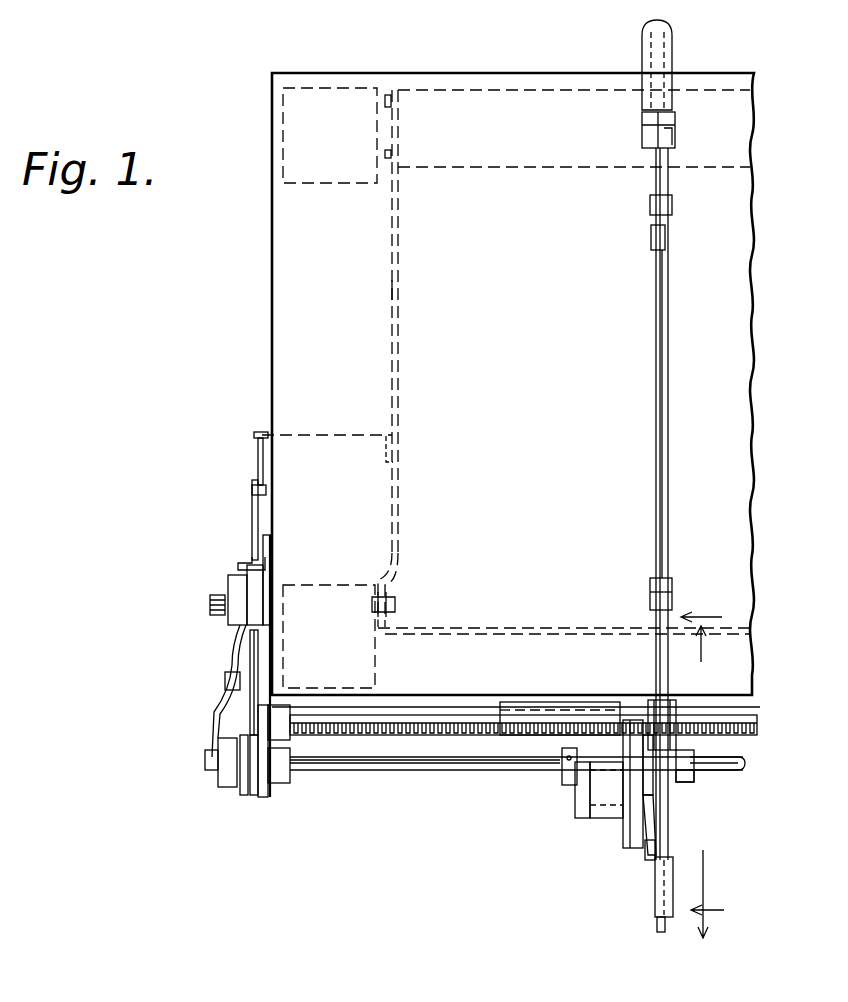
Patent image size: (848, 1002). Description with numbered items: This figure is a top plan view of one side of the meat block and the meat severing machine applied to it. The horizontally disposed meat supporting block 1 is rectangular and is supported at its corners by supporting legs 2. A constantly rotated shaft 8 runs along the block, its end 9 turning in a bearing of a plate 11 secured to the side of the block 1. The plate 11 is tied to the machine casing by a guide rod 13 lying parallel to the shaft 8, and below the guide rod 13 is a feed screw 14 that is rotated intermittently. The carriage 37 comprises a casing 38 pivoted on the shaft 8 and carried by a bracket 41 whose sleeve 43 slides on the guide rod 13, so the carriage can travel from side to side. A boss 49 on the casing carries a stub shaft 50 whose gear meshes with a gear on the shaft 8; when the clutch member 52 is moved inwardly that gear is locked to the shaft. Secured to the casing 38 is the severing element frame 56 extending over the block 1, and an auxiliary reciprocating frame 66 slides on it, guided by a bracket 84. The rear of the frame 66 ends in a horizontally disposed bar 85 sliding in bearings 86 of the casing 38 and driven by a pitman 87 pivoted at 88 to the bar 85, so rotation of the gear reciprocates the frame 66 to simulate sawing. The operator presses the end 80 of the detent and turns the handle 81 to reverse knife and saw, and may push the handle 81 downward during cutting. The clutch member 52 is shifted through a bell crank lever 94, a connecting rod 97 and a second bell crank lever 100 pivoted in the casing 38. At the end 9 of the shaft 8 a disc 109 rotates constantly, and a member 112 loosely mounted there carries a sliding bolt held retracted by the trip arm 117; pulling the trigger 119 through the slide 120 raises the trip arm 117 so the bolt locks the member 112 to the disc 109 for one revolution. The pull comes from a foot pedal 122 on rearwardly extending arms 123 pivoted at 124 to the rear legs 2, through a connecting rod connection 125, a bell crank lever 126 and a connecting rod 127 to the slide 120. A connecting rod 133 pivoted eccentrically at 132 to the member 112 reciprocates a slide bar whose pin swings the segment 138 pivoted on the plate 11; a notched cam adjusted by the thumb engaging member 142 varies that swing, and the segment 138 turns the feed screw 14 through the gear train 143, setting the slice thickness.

The meat supporting block 1 is at (524, 332).
The supporting legs 2 is at (342, 186).
The constantly rotated shaft 8 is at (425, 772).
The end of shaft 9 is at (305, 772).
The plate 11 is at (272, 588).
The guide rod 13 is at (440, 715).
The feed screw 14 is at (702, 777).
The carriage 37 is at (622, 812).
The casing 38 is at (636, 848).
The bracket 41 is at (562, 760).
The sleeve 43 is at (514, 704).
The boss 49 is at (578, 806).
The stub shaft 50 is at (600, 822).
The clutch member 52 is at (690, 784).
The severing element frame 56 is at (669, 305).
The auxiliary reciprocating frame 66 is at (656, 344).
The end of pivoted detent 80 is at (676, 119).
The handle 81 is at (674, 50).
The bracket 84 is at (644, 797).
The horizontally disposed bar 85 is at (661, 933).
The bearings 86 is at (655, 905).
The pitman 87 is at (650, 828).
The pivotal connection 88 is at (651, 862).
The bell crank lever 94 is at (672, 712).
The connecting rod 97 is at (685, 762).
The bell crank lever 100 is at (692, 775).
The disc 109 is at (256, 798).
The member 112 is at (226, 788).
The trip arm 117 is at (245, 797).
The trigger 119 is at (260, 712).
The slide 120 is at (248, 558).
The foot pedal 122 is at (465, 170).
The rearwardly extending arms 123 is at (398, 288).
The pivot 124 is at (395, 598).
The connecting rod connection 125 is at (254, 436).
The bell crank lever 126 is at (258, 462).
The connecting rod 127 is at (252, 507).
The eccentric pivot 132 is at (205, 762).
The connecting rod 133 is at (222, 709).
The segment 138 is at (236, 636).
The thumb engaging member 142 is at (210, 606).
The gear train 143 is at (226, 683).